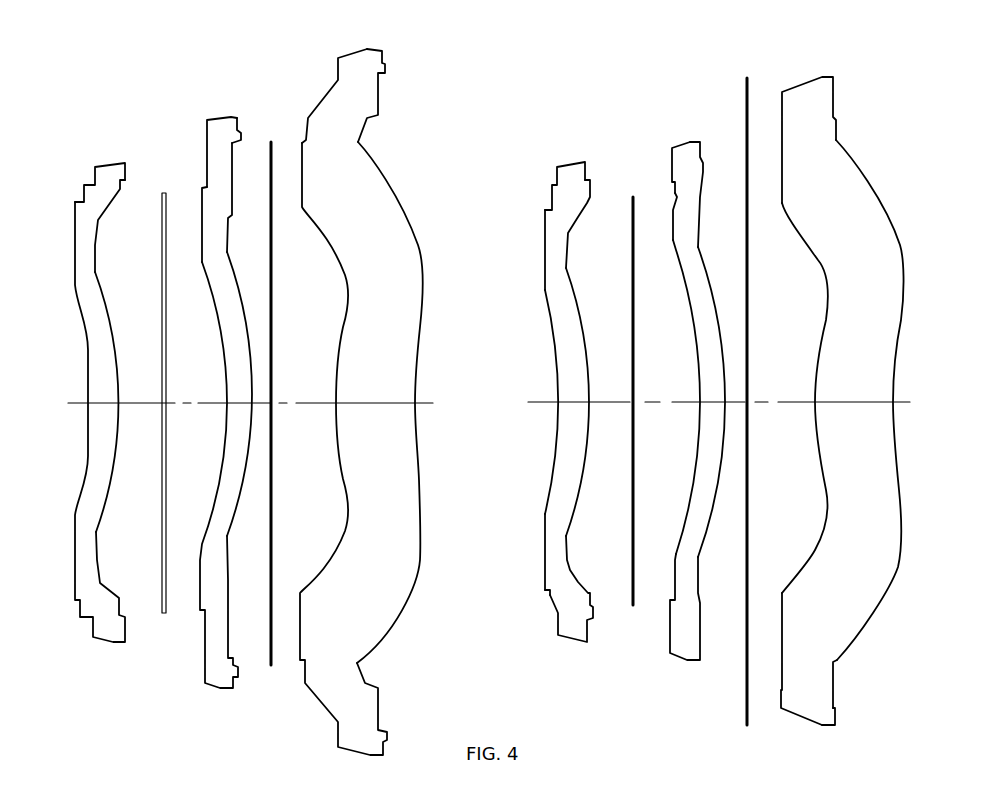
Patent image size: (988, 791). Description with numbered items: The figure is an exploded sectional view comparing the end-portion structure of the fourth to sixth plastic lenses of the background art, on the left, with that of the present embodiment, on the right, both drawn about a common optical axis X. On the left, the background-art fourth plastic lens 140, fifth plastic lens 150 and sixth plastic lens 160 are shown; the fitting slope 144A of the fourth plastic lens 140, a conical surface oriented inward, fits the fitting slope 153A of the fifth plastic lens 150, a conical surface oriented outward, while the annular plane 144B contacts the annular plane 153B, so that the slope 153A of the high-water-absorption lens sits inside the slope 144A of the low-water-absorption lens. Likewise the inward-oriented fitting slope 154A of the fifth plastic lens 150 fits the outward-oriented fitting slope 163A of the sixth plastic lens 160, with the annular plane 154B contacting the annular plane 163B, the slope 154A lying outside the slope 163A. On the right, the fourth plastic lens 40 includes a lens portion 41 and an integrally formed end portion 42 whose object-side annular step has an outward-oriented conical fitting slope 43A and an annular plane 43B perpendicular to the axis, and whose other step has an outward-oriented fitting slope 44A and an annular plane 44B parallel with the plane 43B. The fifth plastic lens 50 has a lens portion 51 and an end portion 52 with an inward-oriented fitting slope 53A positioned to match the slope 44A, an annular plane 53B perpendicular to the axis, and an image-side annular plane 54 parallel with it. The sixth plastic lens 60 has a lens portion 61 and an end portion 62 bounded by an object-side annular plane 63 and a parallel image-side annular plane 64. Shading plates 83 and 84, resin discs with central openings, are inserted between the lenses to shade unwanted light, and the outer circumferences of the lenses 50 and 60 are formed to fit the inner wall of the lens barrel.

The optical axis X is at (73, 403).
The fourth plastic lens 40 is at (549, 387).
The lens portion 41 is at (572, 407).
The end portion 42 is at (573, 628).
The fitting slope 43A is at (545, 592).
The annular plane 43B is at (550, 593).
The fitting slope 44A is at (590, 178).
The annular plane 44B is at (588, 163).
The fifth plastic lens 50 is at (666, 408).
The lens portion 51 is at (707, 408).
The end portion 52 is at (685, 650).
The fitting slope 53A is at (672, 195).
The annular plane 53B is at (672, 182).
The annular plane 54 is at (703, 170).
The sixth plastic lens 60 is at (830, 410).
The lens portion 61 is at (850, 412).
The end portion 62 is at (802, 707).
The annular plane 63 is at (782, 143).
The annular plane 64 is at (835, 707).
The shading plate 83 is at (630, 585).
The shading plate 84 is at (746, 700).
The fourth plastic lens 140 is at (94, 373).
The fitting slope 144A is at (121, 190).
The annular plane 144B is at (125, 186).
The fifth plastic lens 150 is at (215, 369).
The fitting slope 153A is at (199, 186).
The annular plane 153B is at (205, 187).
The fitting slope 154A is at (238, 147).
The annular plane 154B is at (242, 145).
The sixth plastic lens 160 is at (344, 384).
The fitting slope 163A is at (306, 129).
The annular plane 163B is at (302, 142).